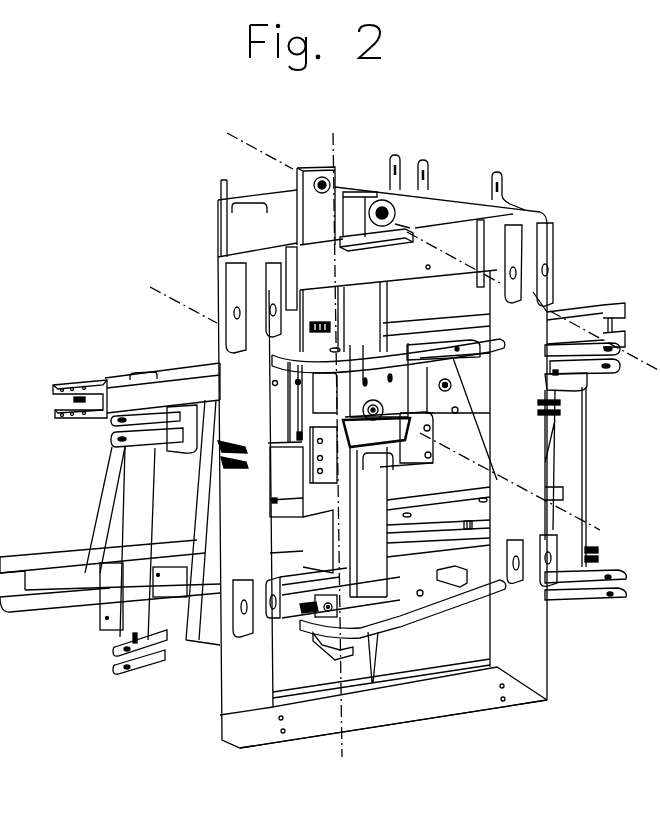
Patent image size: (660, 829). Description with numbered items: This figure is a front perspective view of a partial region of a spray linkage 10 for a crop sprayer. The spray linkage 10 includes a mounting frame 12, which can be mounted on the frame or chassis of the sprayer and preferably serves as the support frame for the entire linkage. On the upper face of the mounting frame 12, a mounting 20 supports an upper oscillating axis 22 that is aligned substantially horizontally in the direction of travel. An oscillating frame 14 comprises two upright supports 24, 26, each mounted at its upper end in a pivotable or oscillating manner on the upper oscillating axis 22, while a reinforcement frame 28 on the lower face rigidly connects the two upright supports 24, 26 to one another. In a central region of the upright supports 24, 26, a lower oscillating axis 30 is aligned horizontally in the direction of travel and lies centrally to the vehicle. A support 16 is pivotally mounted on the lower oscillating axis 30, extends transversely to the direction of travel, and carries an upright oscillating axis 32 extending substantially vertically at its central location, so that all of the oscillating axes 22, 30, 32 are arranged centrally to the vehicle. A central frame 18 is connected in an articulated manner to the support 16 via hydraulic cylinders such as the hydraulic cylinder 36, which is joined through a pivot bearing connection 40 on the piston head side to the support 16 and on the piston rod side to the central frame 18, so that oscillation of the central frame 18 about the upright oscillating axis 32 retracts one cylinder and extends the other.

The spray linkage 10 is at (576, 220).
The mounting frame 12 is at (455, 237).
The oscillating frame 14 is at (370, 547).
The support 16 is at (325, 398).
The central frame 18 is at (122, 402).
The mounting 20 is at (237, 238).
The upper oscillating axis 22 is at (258, 150).
The upright support 24 is at (316, 166).
The upright support 26 is at (360, 193).
The reinforcement frame 28 is at (313, 600).
The lower oscillating axis 30 is at (183, 300).
The upright oscillating axis 32 is at (342, 755).
The hydraulic cylinder 36 is at (190, 410).
The pivot bearing connection 40 is at (218, 443).